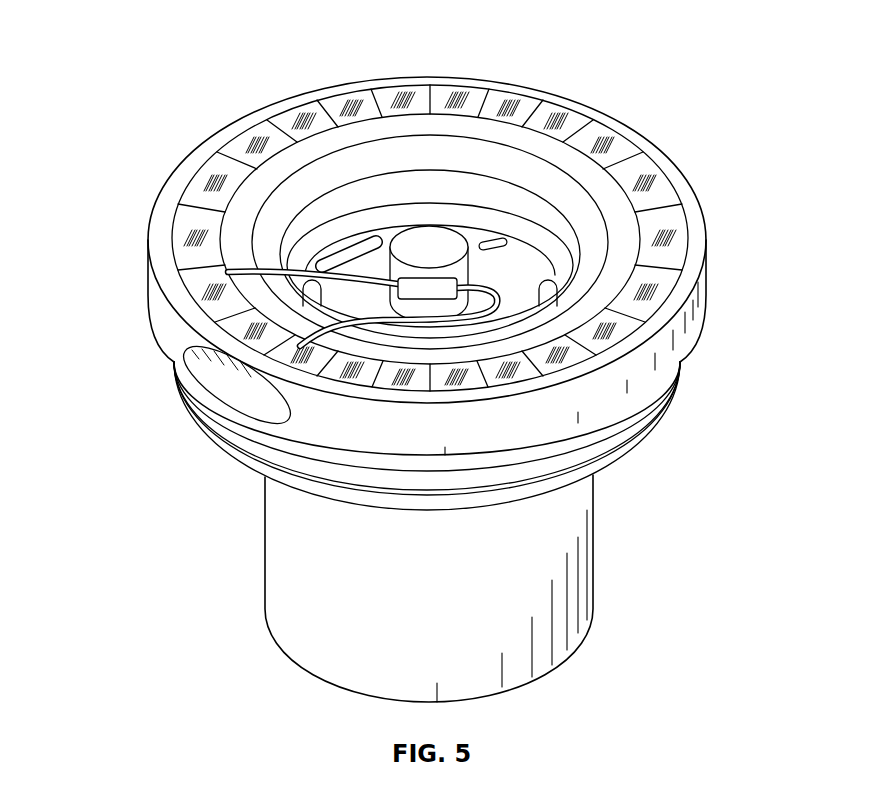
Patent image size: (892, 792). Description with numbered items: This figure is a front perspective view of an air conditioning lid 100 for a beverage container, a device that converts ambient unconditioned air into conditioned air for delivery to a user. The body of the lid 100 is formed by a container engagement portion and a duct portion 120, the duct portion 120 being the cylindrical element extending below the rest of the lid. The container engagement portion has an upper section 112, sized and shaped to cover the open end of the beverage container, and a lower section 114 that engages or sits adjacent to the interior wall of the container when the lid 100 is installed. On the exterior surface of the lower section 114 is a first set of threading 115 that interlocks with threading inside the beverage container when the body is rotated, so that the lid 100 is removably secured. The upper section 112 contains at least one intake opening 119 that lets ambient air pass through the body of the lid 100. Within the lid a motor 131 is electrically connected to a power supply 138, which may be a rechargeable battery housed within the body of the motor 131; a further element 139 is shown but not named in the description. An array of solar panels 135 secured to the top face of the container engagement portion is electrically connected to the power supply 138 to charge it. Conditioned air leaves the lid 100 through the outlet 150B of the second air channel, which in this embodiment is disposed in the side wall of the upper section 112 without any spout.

The lid 100 is at (172, 47).
The upper section 112 is at (688, 308).
The lower section 114 is at (674, 392).
The first set of threading 115 is at (623, 436).
The intake opening 119 is at (340, 257).
The duct portion 120 is at (583, 581).
The motor 131 is at (438, 242).
The solar panels 135 is at (373, 97).
The power supply 138 is at (452, 283).
The wire 139 is at (226, 270).
The outlet 150B is at (217, 394).